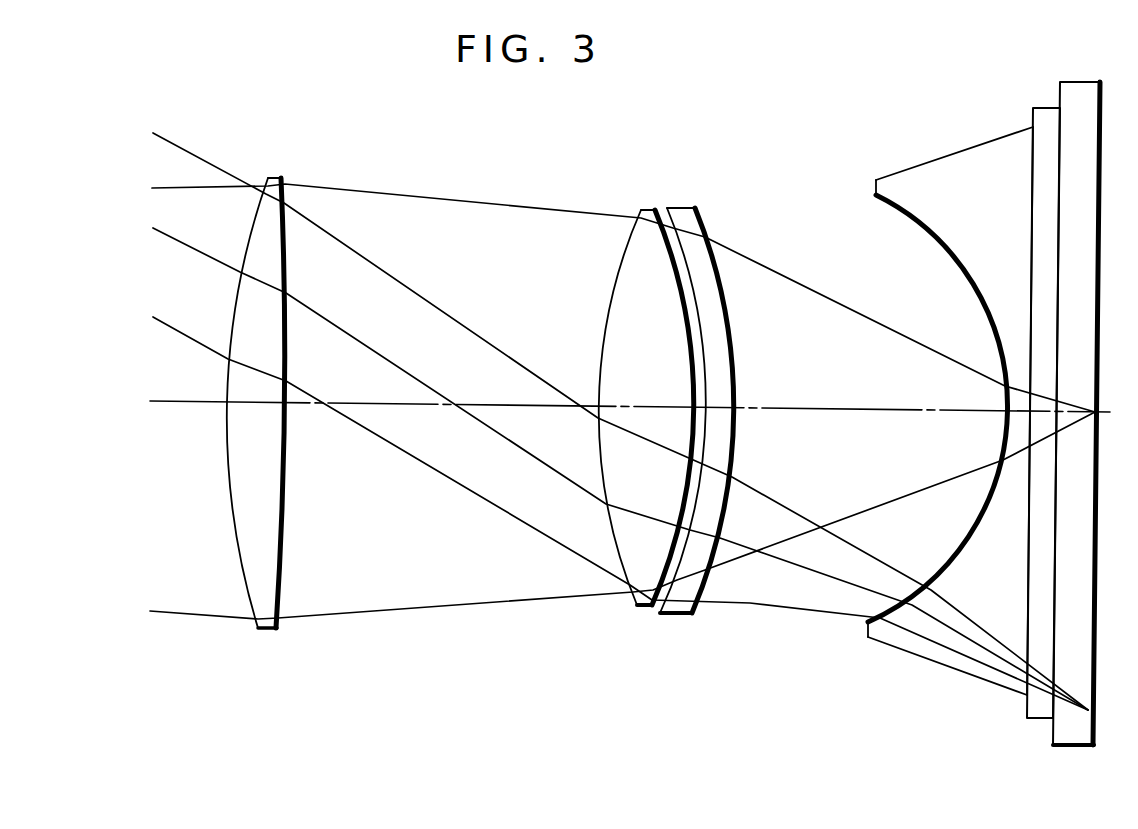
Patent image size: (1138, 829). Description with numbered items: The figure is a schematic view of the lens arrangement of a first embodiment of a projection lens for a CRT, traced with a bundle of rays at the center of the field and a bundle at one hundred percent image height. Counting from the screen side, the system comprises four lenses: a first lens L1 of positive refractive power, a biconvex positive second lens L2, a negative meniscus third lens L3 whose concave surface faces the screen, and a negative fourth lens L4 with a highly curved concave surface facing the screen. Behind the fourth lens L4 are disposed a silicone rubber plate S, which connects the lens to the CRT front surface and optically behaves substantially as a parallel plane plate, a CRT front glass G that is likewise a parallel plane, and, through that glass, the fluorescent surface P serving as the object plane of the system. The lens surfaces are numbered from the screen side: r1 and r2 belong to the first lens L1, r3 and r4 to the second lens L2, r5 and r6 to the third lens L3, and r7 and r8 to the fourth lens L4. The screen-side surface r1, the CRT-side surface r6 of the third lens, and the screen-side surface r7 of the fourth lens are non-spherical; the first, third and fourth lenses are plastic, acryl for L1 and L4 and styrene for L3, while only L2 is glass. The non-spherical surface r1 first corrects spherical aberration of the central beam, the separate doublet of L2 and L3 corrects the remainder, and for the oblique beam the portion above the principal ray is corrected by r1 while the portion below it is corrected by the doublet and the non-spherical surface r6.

The first lens L1 is at (266, 416).
The second lens L2 is at (633, 423).
The third lens L3 is at (695, 423).
The fourth lens L4 is at (929, 429).
The silicone rubber plate S is at (1052, 108).
The CRT front glass G is at (1082, 85).
The fluorescent surface P is at (1100, 163).
The lens surface r1 is at (259, 631).
The lens surface r2 is at (280, 631).
The lens surface r3 is at (632, 604).
The lens surface r4 is at (658, 609).
The lens surface r5 is at (663, 603).
The lens surface r6 is at (699, 611).
The lens surface r7 is at (869, 619).
The lens surface r8 is at (1026, 707).